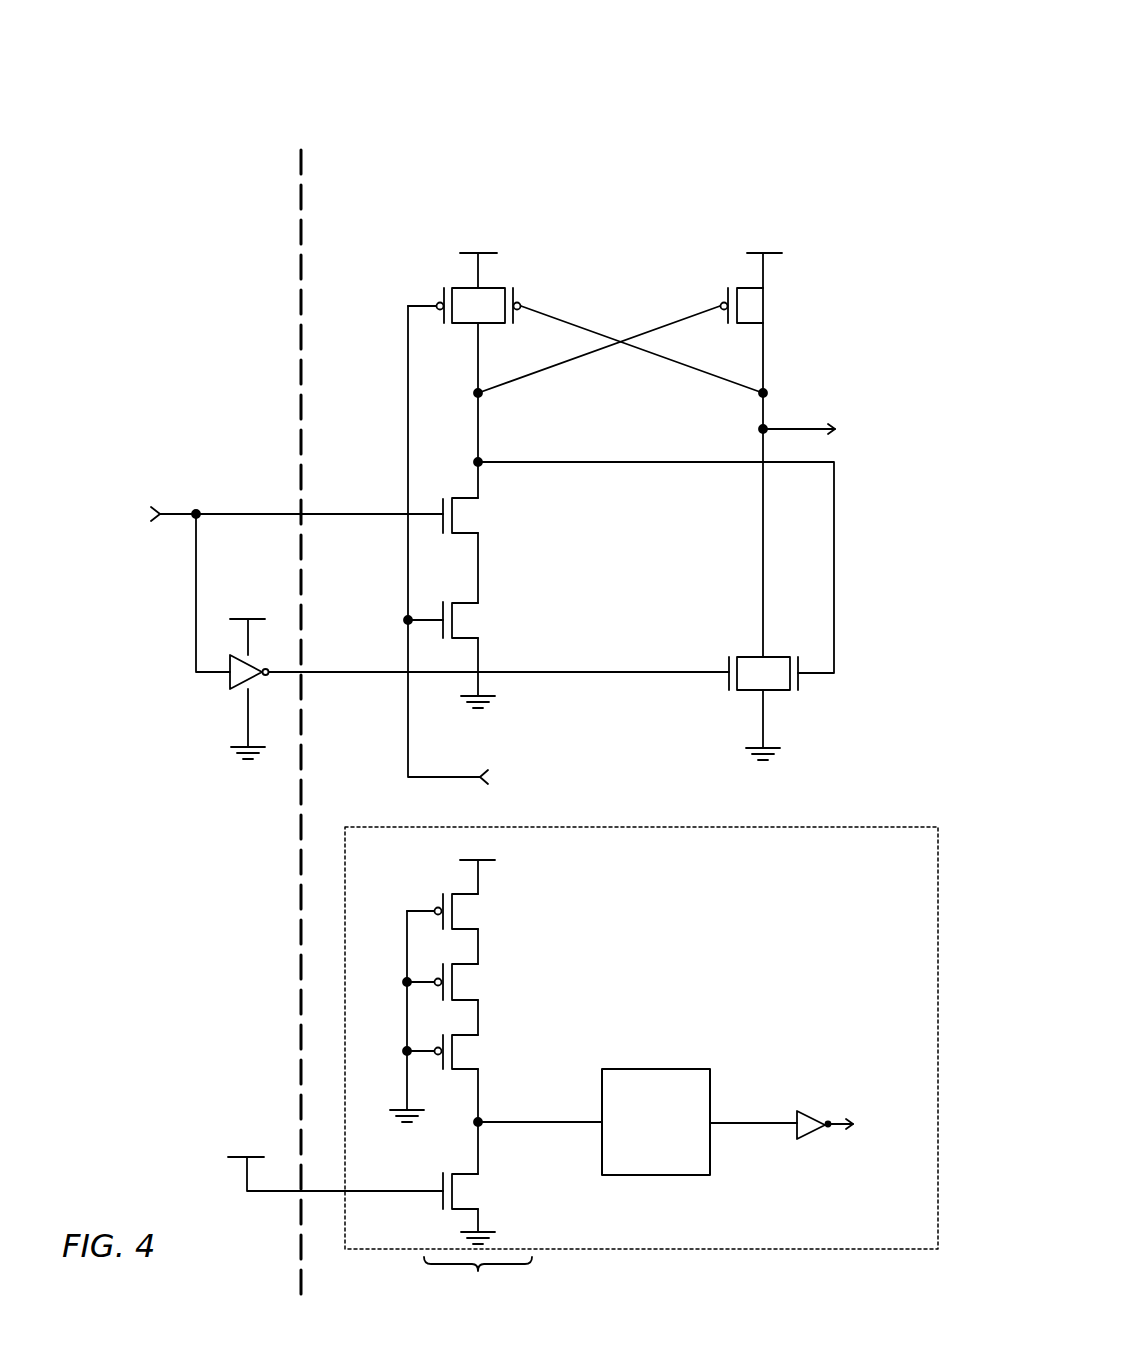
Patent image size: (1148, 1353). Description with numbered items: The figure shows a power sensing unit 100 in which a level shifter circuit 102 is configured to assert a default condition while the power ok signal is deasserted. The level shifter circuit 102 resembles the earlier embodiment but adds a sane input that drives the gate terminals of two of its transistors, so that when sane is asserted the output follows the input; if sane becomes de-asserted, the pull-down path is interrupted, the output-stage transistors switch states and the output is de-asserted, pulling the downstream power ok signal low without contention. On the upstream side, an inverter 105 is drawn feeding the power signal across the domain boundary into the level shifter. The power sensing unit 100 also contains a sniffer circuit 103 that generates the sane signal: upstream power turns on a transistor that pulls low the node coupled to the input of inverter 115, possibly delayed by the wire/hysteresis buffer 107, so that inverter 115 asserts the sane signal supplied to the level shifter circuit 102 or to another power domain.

The power sensing unit 100 is at (608, 58).
The level shifter circuit 102 is at (811, 252).
The sniffer circuit 103 is at (345, 895).
The inverter 105 is at (230, 686).
The wire/hysteresis buffer 107 is at (656, 1122).
The inverter 115 is at (814, 1110).